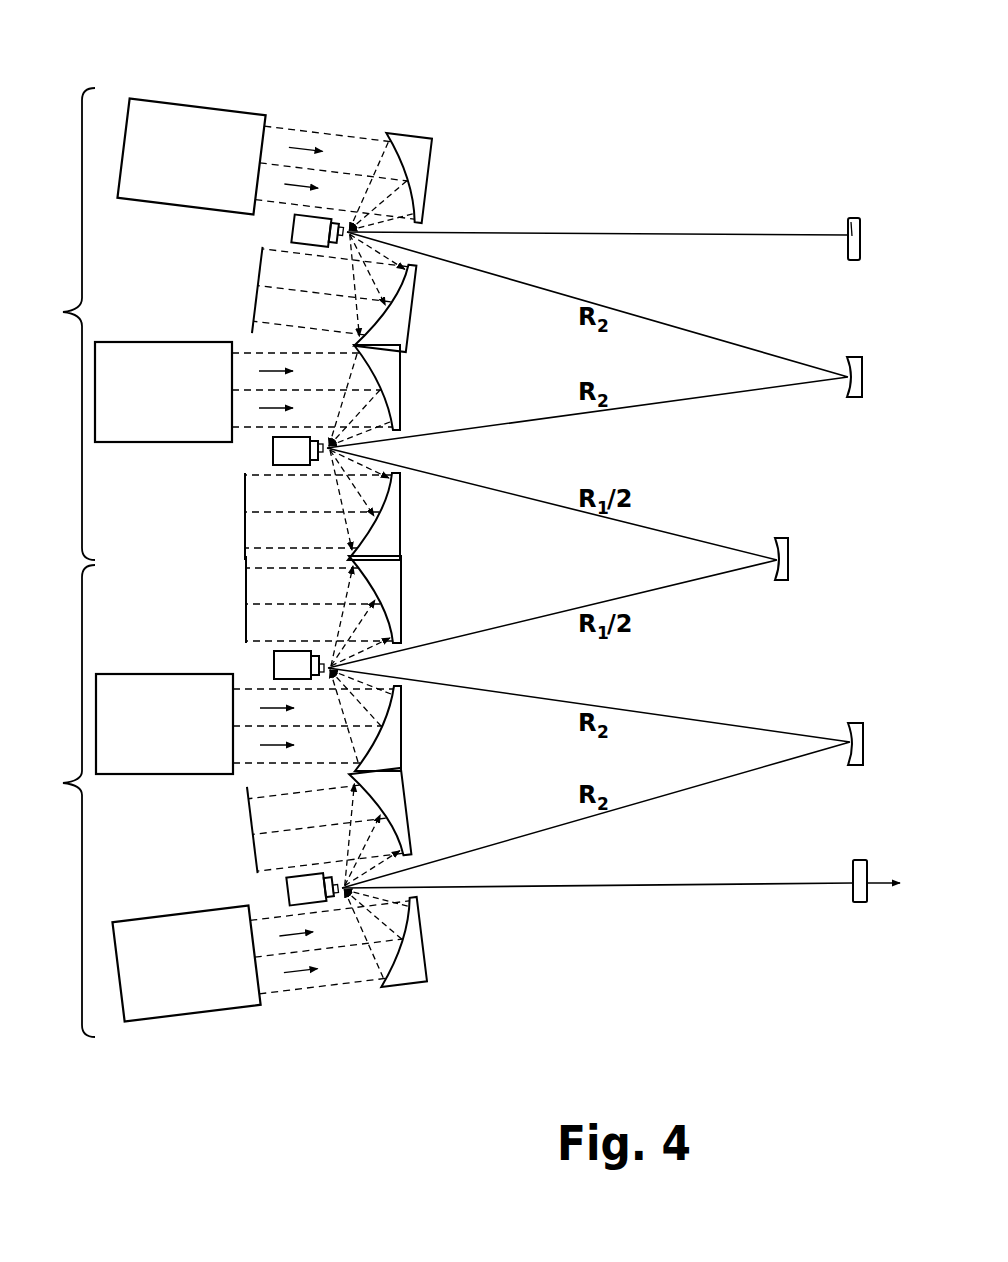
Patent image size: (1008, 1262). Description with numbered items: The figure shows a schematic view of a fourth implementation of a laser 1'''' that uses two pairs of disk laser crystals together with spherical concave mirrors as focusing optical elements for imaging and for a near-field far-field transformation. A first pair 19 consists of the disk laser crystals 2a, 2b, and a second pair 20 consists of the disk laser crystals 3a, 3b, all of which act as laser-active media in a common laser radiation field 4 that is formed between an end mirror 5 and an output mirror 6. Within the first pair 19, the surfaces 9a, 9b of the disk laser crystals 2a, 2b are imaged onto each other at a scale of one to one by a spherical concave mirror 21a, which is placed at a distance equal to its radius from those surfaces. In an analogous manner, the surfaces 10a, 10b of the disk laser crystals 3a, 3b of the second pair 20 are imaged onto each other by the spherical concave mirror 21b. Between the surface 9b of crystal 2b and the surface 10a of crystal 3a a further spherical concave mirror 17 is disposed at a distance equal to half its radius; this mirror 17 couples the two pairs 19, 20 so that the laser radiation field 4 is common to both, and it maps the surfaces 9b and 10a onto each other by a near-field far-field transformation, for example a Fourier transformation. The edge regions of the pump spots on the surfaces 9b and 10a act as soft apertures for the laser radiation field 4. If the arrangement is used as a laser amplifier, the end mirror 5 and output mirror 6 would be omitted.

The laser 1'''' is at (648, 67).
The disk laser crystal 2a is at (288, 228).
The disk laser crystal 2b is at (273, 453).
The disk laser crystal 3a is at (272, 668).
The disk laser crystal 3b is at (285, 892).
The laser radiation field 4 is at (632, 233).
The end mirror 5 is at (853, 220).
The output mirror 6 is at (860, 902).
The surface of disk laser crystal 9a is at (352, 224).
The surface of disk laser crystal 9b is at (325, 440).
The surface of disk laser crystal 10a is at (328, 677).
The surface of disk laser crystal 10b is at (340, 897).
The spherical concave mirror 17 is at (790, 547).
The first pair of disk laser crystals 19 is at (254, 324).
The second pair of disk laser crystals 20 is at (262, 796).
The spherical concave mirror 21a is at (857, 357).
The spherical concave mirror 21b is at (860, 723).